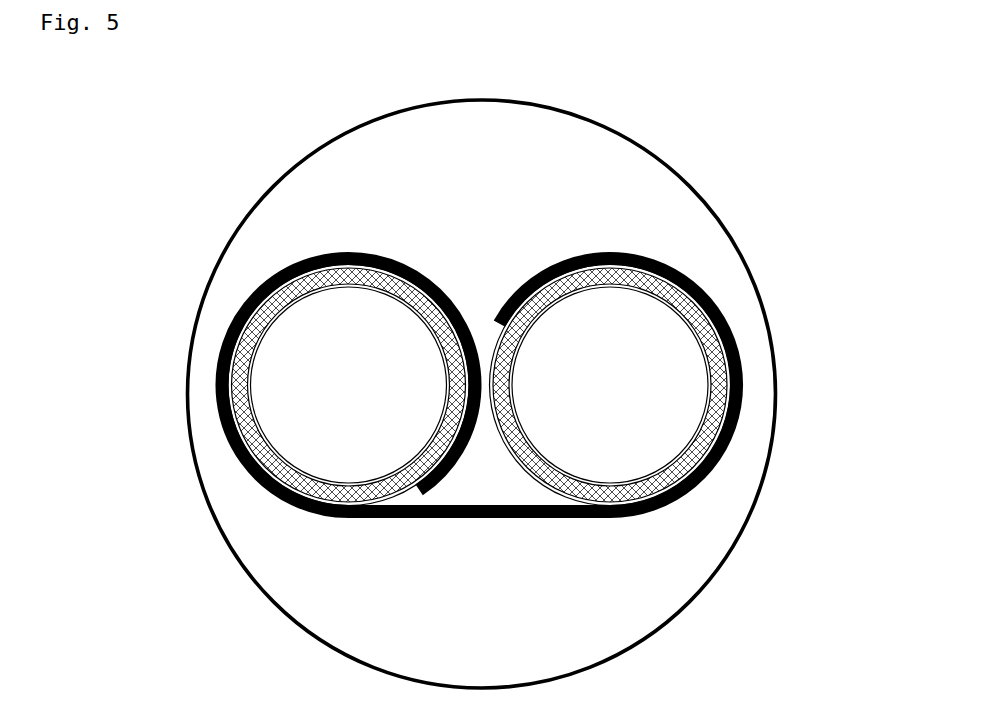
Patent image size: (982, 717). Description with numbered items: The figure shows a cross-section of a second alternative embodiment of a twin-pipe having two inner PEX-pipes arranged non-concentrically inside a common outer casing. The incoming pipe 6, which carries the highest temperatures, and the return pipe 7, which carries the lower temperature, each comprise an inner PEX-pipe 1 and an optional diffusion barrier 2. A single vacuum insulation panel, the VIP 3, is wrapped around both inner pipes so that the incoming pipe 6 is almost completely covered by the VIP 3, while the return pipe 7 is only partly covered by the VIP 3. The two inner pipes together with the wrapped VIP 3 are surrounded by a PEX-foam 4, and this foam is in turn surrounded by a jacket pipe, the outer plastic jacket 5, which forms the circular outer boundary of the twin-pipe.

The inner PEX-pipe 1 is at (508, 405).
The optional diffusion barrier 2 is at (717, 303).
The vacuum insulation panel (VIP) 3 is at (728, 323).
The PEX-foam 4 is at (737, 345).
The outer plastic jacket 5 is at (776, 367).
The incoming pipe (highest temperature) 6 is at (585, 345).
The return pipe (lower temperature) 7 is at (272, 370).